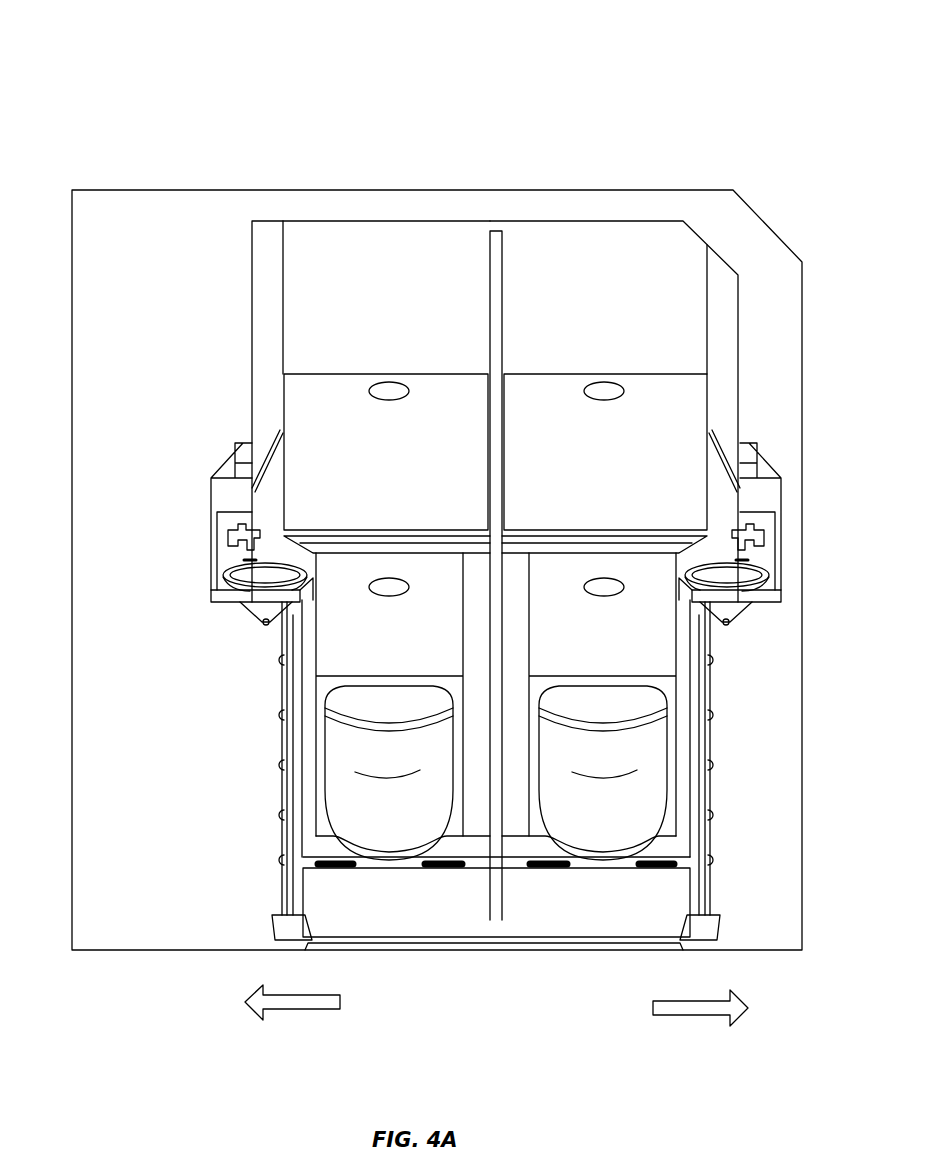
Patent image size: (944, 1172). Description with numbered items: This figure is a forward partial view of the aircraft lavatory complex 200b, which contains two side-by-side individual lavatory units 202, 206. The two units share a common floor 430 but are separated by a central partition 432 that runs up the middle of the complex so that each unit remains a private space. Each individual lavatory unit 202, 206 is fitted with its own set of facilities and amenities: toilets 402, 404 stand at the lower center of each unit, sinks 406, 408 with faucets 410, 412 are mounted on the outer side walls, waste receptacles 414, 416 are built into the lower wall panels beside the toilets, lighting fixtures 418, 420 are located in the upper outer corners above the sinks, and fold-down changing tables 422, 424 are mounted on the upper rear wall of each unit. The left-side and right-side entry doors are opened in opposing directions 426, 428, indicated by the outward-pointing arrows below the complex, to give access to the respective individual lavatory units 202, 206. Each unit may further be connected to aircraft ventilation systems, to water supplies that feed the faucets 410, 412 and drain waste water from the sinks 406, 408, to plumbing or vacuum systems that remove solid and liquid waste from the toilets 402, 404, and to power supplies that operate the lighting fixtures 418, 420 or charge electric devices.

The aircraft lavatory complex 200b is at (106, 34).
The individual lavatory unit 202 is at (407, 258).
The individual lavatory unit 206 is at (570, 258).
The toilet 402 is at (373, 748).
The toilet 404 is at (607, 757).
The sink 406 is at (267, 614).
The sink 408 is at (740, 605).
The faucet 410 is at (232, 522).
The faucet 412 is at (765, 532).
The waste receptacle 414 is at (347, 576).
The waste receptacle 416 is at (648, 588).
The lighting fixture 418 is at (248, 494).
The lighting fixture 420 is at (740, 495).
The fold-down changing table 422 is at (372, 420).
The fold-down changing table 424 is at (553, 395).
The opening direction 426 is at (284, 1004).
The opening direction 428 is at (700, 1012).
The common floor 430 is at (572, 905).
The central partition 432 is at (494, 922).